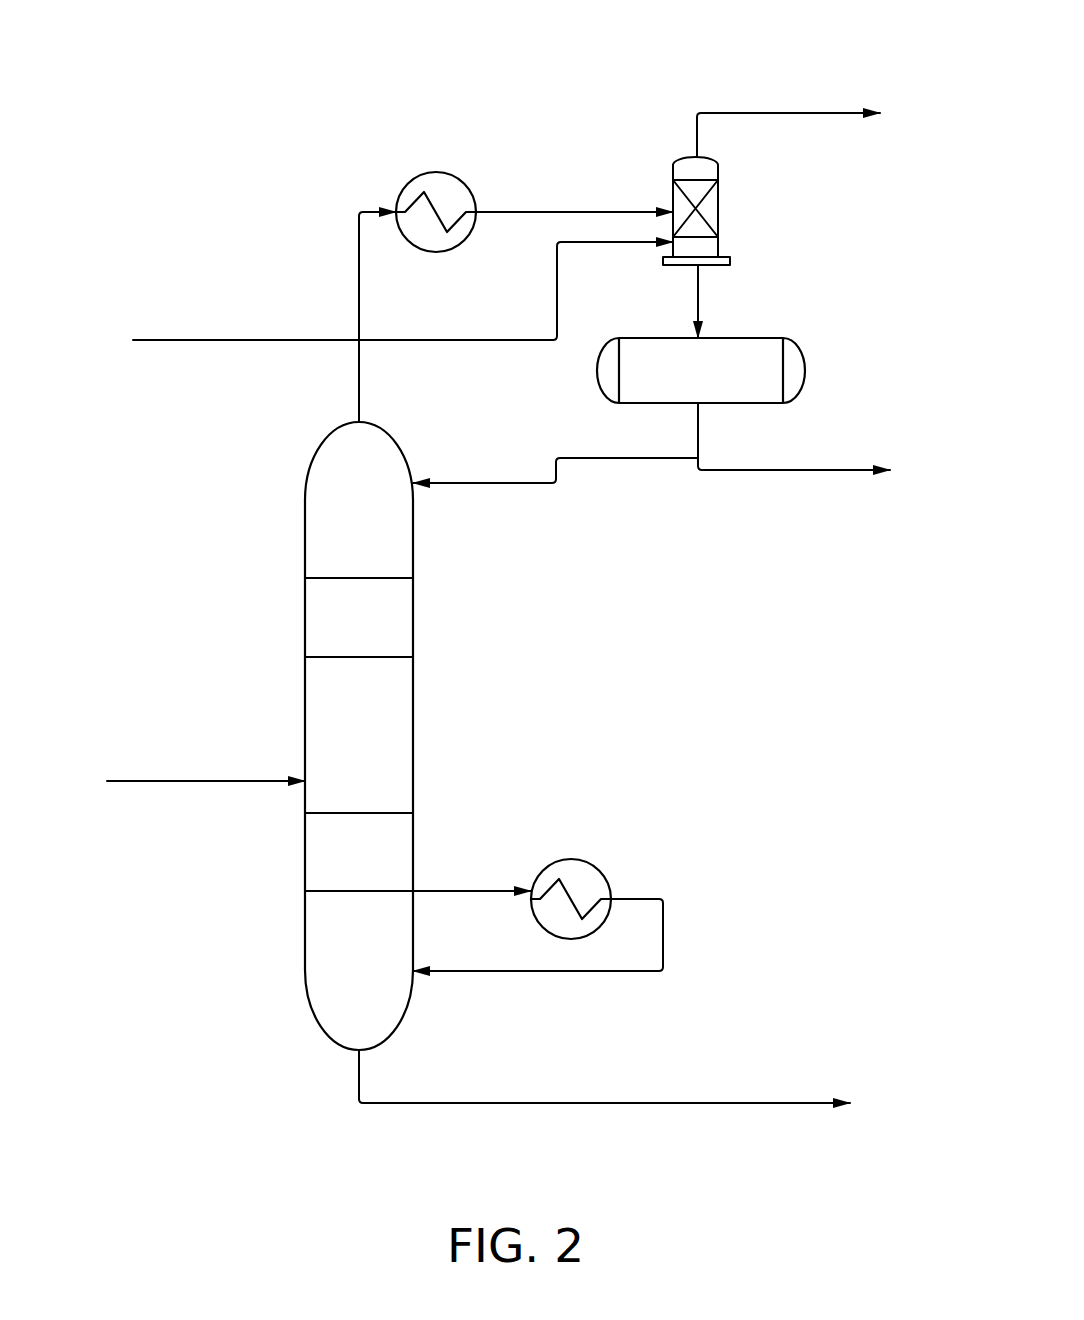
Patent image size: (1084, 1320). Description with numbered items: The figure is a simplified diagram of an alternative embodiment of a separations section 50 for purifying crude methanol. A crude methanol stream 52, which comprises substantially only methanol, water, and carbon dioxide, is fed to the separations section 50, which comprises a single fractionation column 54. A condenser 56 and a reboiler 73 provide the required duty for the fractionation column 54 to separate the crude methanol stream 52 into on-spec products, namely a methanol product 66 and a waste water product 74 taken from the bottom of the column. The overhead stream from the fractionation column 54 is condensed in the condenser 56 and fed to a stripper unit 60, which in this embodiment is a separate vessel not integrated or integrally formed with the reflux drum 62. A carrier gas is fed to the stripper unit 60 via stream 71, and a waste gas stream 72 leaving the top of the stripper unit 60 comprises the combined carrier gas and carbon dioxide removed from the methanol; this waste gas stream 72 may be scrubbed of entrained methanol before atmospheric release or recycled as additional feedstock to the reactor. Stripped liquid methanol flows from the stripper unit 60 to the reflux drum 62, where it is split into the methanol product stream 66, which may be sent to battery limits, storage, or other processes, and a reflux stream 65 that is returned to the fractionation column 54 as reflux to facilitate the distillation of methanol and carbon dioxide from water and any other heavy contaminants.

The separations section 50 is at (263, 1072).
The crude methanol stream 52 is at (168, 781).
The fractionation column 54 is at (305, 641).
The condenser 56 is at (414, 178).
The stripper unit 60 is at (672, 185).
The reflux drum 62 is at (762, 338).
The reflux stream 65 is at (485, 483).
The methanol product stream 66 is at (838, 470).
The stream 71 is at (190, 340).
The waste gas stream 72 is at (753, 113).
The reboiler 73 is at (568, 858).
The waste water product 74 is at (630, 1103).